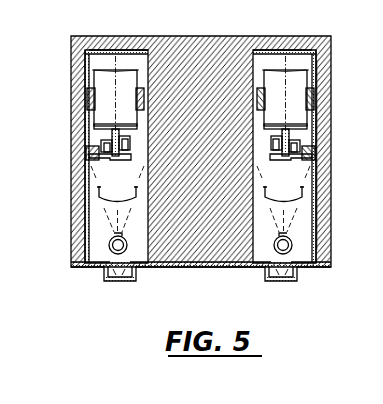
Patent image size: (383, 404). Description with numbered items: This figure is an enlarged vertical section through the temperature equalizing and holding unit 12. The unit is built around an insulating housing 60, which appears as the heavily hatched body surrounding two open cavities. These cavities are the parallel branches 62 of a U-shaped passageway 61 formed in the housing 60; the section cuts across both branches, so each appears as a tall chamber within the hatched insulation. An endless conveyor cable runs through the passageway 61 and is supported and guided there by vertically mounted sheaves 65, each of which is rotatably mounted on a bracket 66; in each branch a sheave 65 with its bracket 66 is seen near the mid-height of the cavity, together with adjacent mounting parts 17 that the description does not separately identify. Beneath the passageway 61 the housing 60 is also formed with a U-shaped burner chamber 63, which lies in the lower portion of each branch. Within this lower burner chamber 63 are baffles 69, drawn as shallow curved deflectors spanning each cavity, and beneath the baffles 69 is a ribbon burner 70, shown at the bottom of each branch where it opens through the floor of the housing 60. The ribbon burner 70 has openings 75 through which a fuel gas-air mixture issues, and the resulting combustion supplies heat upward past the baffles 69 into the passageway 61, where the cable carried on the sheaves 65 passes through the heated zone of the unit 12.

The temperature equalizing and holding unit 12 is at (345, 92).
The motor mounting brackets 17 is at (96, 90).
The insulating housing 60 is at (333, 225).
The U-shaped passageway 61 is at (305, 60).
The parallel branches 62 is at (112, 55).
The U-shaped burner chamber 63 is at (318, 259).
The sheaves 65 is at (117, 157).
The bracket 66 is at (87, 153).
The baffles 69 is at (106, 196).
The ribbon burner 70 is at (110, 273).
The openings 75 is at (109, 245).